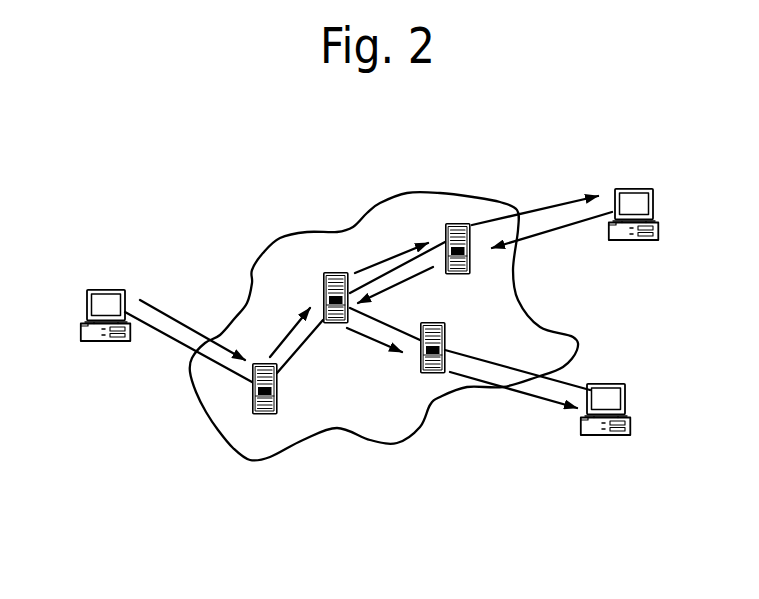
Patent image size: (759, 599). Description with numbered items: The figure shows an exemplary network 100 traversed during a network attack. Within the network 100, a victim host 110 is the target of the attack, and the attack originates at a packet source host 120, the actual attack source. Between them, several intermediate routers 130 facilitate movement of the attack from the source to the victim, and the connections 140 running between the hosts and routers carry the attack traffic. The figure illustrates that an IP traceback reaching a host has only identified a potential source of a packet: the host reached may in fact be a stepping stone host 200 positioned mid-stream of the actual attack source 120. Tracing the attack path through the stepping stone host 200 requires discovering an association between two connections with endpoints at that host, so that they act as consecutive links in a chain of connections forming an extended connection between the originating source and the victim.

The network 100 is at (213, 243).
The victim host 110 is at (100, 360).
The packet source host 120 is at (580, 430).
The intermediate routers 130 is at (328, 270).
The network link / communication path 140 is at (540, 209).
The stepping stone host 200 is at (658, 231).